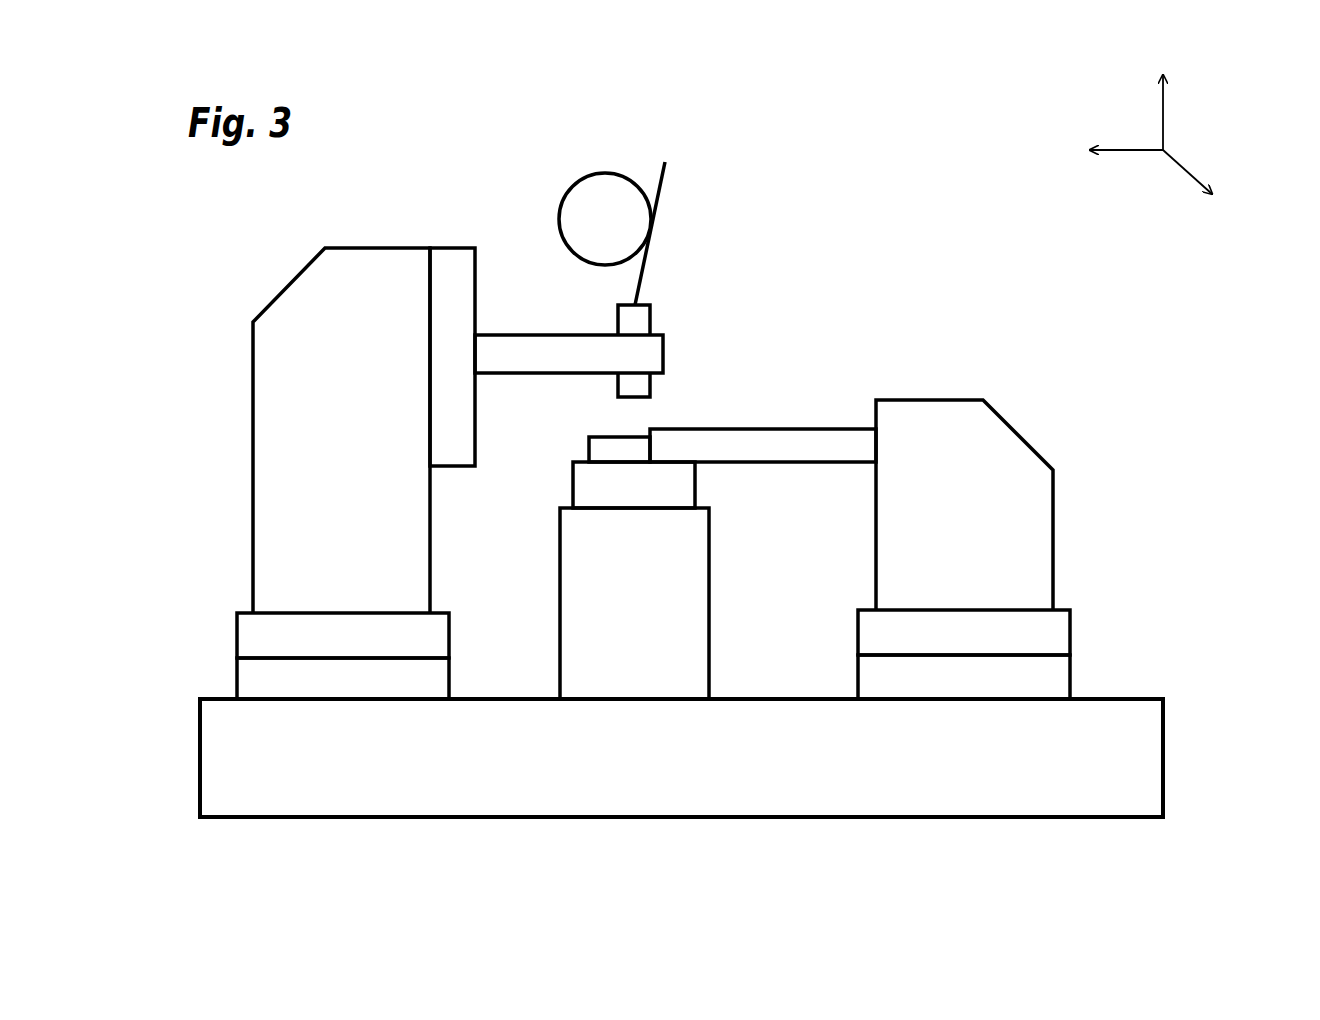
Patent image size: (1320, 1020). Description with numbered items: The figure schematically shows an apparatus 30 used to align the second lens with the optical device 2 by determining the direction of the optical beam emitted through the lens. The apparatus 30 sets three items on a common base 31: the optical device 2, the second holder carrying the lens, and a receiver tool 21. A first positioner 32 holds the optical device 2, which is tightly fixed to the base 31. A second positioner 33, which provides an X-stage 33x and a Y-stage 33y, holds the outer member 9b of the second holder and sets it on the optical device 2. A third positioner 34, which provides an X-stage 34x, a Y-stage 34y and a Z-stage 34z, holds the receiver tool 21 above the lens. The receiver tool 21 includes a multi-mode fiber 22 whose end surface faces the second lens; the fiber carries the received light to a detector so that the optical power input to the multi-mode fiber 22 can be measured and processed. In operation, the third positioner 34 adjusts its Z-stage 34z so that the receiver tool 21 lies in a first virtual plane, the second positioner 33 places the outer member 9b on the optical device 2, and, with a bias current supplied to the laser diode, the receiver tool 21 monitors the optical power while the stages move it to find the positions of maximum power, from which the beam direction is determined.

The apparatus 30 is at (827, 178).
The base 31 is at (1165, 757).
The first positioner 32 is at (525, 543).
The second positioner 33 is at (909, 549).
The X-stage 33x is at (1066, 633).
The Y-stage 33y is at (1066, 676).
The third positioner 34 is at (339, 434).
The X-stage 34x is at (445, 633).
The Y-stage 34y is at (445, 676).
The Z-stage 34z is at (455, 247).
The receiver tool 21 is at (652, 312).
The multi-mode fiber 22 is at (660, 190).
The optical device 2 is at (687, 488).
The outer member 9b is at (592, 450).